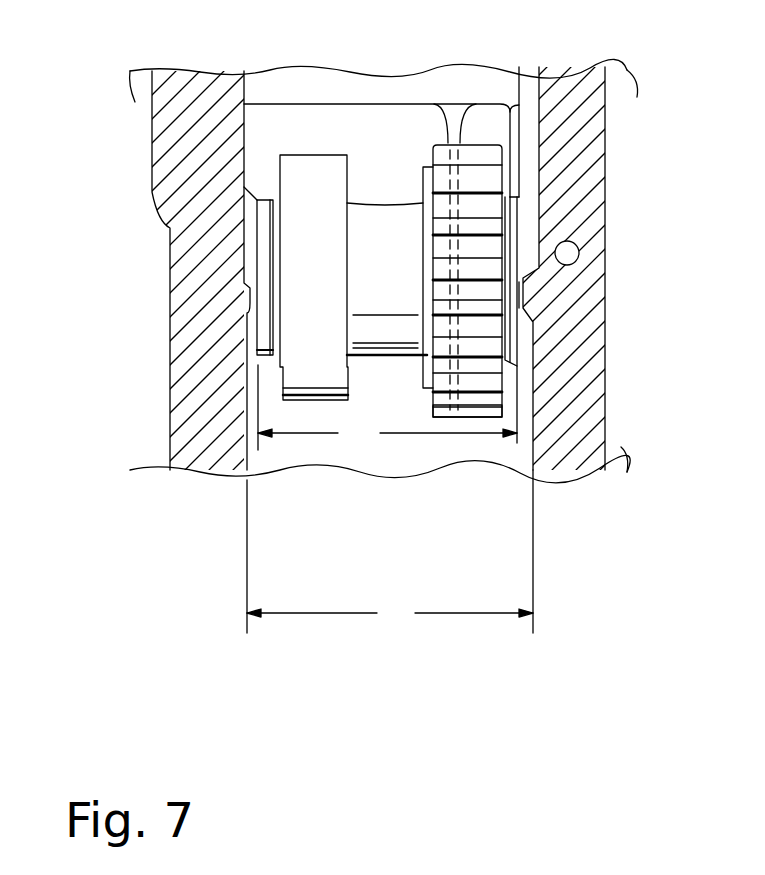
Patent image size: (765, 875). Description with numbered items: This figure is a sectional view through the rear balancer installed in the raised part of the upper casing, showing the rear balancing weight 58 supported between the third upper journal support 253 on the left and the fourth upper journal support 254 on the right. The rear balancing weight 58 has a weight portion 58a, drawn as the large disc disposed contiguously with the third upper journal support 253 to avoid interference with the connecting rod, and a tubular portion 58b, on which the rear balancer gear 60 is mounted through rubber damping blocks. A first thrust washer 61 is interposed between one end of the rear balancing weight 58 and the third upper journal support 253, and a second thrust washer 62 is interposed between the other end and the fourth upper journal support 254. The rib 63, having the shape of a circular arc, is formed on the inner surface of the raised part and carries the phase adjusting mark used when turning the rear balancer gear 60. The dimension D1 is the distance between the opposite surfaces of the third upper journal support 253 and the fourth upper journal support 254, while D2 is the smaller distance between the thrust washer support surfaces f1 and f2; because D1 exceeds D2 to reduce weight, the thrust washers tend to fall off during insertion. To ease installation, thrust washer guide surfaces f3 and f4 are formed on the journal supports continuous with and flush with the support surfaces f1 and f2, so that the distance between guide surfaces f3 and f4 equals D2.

The third upper journal support 253 is at (163, 141).
The fourth upper journal support 254 is at (592, 157).
The first thrust washer 61 is at (264, 205).
The second thrust washer 62 is at (519, 67).
The rib 63 is at (448, 133).
The rear balancing weight 58 is at (391, 358).
The weight portion 58a is at (320, 402).
The tubular portion 58b is at (402, 357).
The rear balancer gear 60 is at (480, 419).
The thrust washer support surface f1 is at (257, 249).
The thrust washer support surface f2 is at (515, 222).
The thrust washer guide surface f3 is at (258, 303).
The thrust washer guide surface f4 is at (520, 295).
The distance between opposite surfaces of the journal supports D1 is at (390, 551).
The distance between thrust washer support surfaces D2 is at (387, 323).